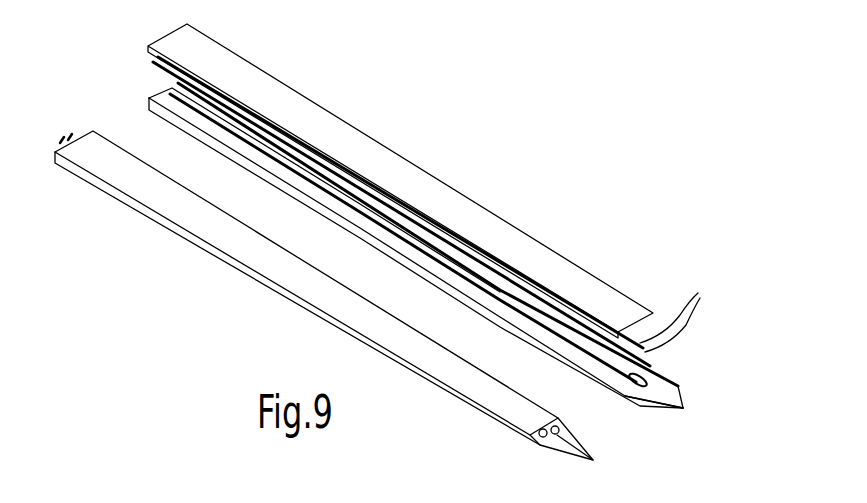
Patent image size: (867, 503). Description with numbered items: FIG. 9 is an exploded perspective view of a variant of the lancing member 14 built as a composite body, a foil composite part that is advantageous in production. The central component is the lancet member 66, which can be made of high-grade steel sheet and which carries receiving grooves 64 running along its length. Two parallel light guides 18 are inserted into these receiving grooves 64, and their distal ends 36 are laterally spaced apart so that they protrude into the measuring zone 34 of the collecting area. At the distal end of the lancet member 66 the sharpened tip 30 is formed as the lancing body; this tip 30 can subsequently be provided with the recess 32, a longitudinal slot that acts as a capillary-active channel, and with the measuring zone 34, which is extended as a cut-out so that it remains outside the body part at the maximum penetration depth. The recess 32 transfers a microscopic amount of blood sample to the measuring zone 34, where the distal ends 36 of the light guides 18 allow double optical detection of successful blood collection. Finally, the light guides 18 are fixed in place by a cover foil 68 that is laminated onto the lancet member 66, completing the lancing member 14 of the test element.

The lancing member 14 is at (447, 402).
The light guide 18 is at (698, 293).
The tip 30 is at (685, 410).
The recess 32 is at (680, 396).
The measuring zone 34 is at (648, 376).
The distal ends of the light guides 36 is at (560, 440).
The receiving grooves 64 is at (437, 257).
The lancet member 66 is at (492, 300).
The cover foil 68 is at (487, 218).